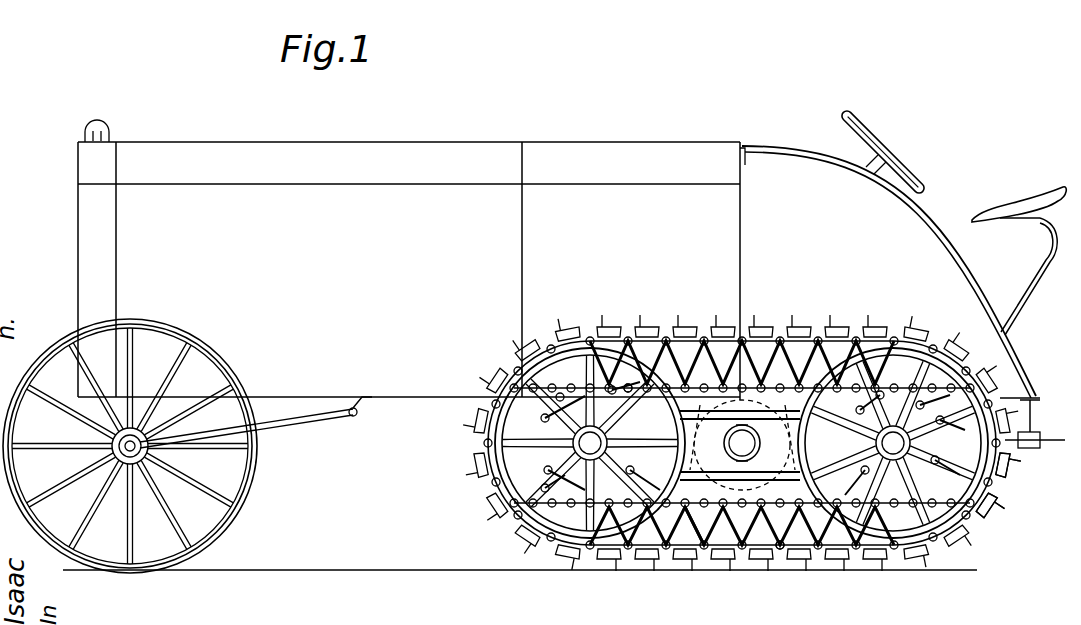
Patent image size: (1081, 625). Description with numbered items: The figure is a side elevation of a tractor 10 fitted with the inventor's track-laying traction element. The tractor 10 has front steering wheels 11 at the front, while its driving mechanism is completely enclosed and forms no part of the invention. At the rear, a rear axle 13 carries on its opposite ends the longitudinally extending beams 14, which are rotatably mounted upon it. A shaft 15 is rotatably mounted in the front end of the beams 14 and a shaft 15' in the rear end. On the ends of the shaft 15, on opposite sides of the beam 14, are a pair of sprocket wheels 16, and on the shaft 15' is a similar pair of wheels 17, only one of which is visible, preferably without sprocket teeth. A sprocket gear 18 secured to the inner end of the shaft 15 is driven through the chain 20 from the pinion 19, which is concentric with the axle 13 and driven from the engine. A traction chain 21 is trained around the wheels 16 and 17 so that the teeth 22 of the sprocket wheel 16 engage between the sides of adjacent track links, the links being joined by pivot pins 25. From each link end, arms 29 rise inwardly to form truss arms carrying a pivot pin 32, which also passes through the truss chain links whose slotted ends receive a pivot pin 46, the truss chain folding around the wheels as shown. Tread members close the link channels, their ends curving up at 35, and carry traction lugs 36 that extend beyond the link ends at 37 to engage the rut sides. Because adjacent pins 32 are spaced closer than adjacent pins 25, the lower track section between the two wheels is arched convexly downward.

The tractor 10 is at (572, 278).
The front steering wheels 11 is at (258, 445).
The rear axle 13 is at (752, 446).
The longitudinally extending beams 14 is at (745, 498).
The shaft 15 is at (590, 443).
The shaft 15' is at (893, 443).
The sprocket wheels 16 is at (503, 443).
The wheels 17 is at (980, 470).
The sprocket gear 18 is at (629, 490).
The pinion 19 is at (762, 418).
The chain 20 is at (684, 346).
The traction chain 21 is at (742, 551).
The teeth 22 is at (518, 372).
The pivot pin 25 is at (703, 550).
The arm 29 is at (708, 522).
The pivot pin 32 is at (800, 498).
The upwardly curved ends 35 is at (953, 547).
The traction lugs 36 is at (850, 566).
The lug extensions 37 is at (912, 553).
The pivot pin 46 is at (785, 549).